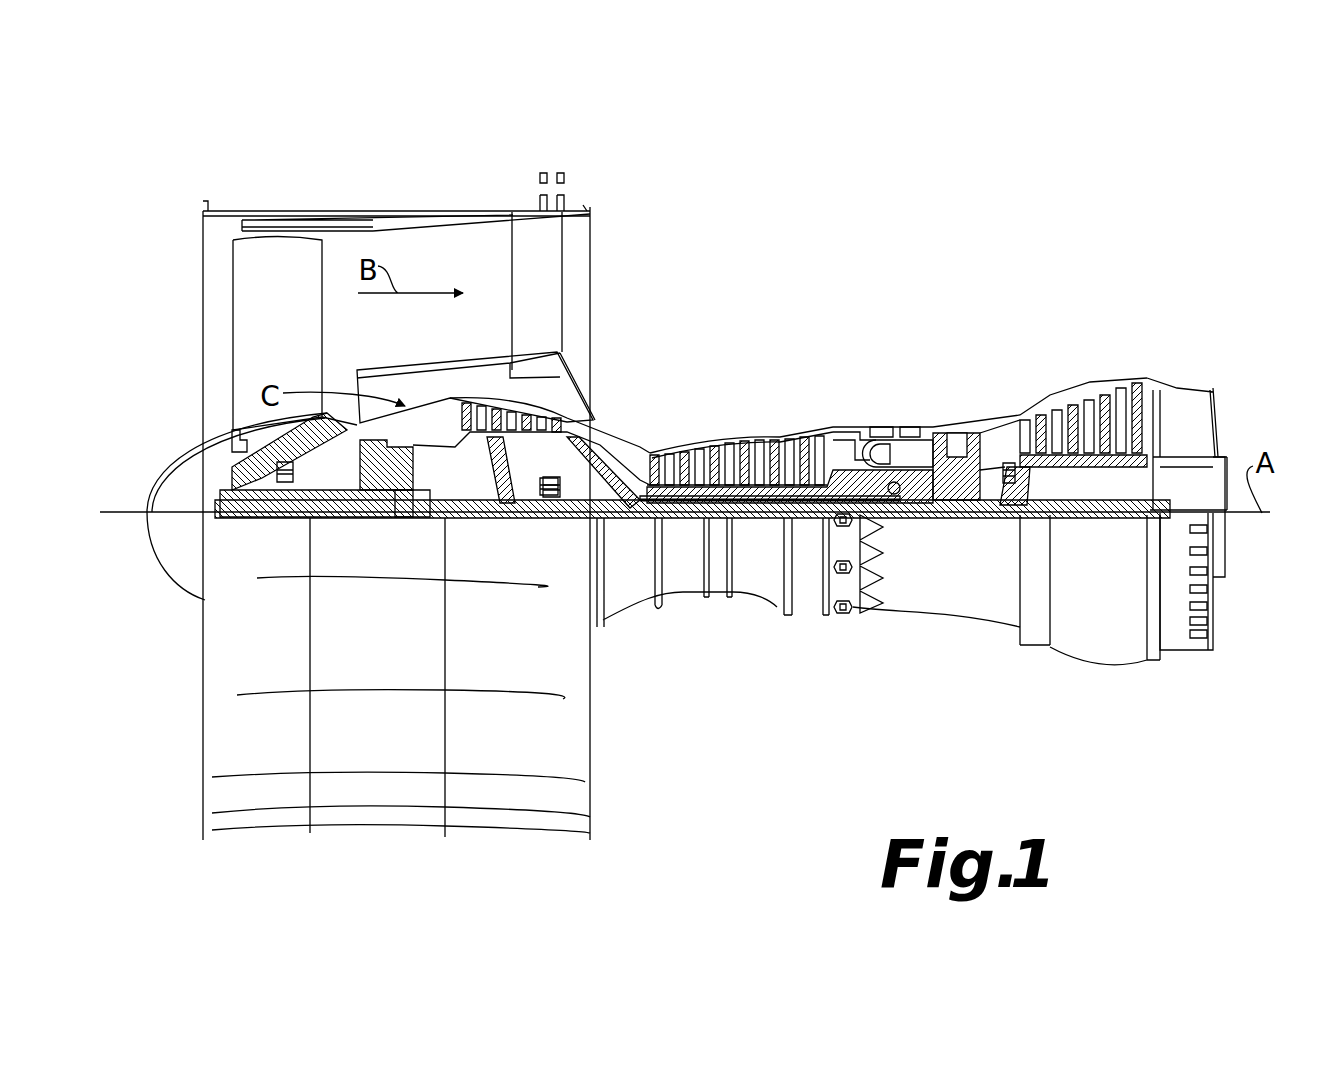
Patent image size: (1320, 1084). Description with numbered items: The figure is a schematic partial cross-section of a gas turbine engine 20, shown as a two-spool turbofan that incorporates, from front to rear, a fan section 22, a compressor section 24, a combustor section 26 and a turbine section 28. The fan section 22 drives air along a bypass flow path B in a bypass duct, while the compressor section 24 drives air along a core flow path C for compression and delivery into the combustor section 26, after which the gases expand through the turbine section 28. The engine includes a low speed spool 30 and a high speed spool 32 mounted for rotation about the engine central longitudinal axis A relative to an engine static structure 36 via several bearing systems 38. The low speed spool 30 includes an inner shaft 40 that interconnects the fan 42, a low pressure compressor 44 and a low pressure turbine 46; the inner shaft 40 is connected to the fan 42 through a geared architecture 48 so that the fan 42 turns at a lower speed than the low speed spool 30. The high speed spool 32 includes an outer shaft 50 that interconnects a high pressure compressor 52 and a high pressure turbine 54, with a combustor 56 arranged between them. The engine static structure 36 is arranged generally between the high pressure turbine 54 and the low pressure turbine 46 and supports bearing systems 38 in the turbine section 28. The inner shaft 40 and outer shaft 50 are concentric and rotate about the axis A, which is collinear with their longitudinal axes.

The gas turbine engine 20 is at (905, 248).
The fan section 22 is at (190, 178).
The compressor section 24 is at (877, 338).
The combustor section 26 is at (980, 338).
The turbine section 28 is at (990, 338).
The low speed spool 30 is at (763, 522).
The high speed spool 32 is at (803, 477).
The engine static structure 36 is at (807, 612).
The bearing systems 38 is at (288, 520).
The inner shaft 40 is at (645, 607).
The fan 42 is at (284, 357).
The low pressure compressor 44 is at (522, 407).
The low pressure turbine 46 is at (1088, 397).
The geared architecture 48 is at (408, 520).
The outer shaft 50 is at (893, 493).
The high pressure compressor 52 is at (738, 488).
The high pressure turbine 54 is at (953, 430).
The combustor 56 is at (883, 453).